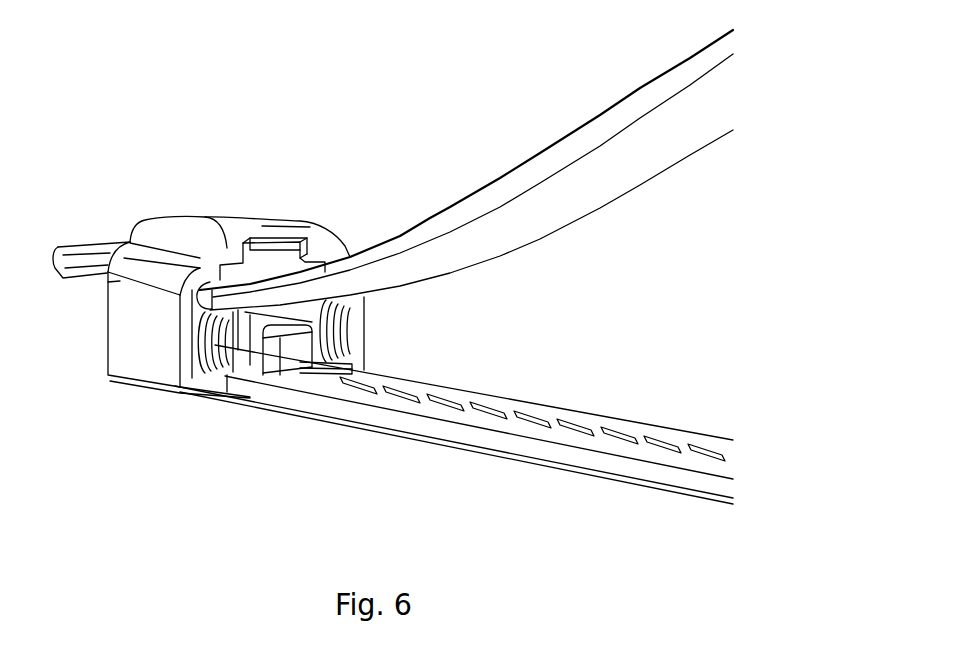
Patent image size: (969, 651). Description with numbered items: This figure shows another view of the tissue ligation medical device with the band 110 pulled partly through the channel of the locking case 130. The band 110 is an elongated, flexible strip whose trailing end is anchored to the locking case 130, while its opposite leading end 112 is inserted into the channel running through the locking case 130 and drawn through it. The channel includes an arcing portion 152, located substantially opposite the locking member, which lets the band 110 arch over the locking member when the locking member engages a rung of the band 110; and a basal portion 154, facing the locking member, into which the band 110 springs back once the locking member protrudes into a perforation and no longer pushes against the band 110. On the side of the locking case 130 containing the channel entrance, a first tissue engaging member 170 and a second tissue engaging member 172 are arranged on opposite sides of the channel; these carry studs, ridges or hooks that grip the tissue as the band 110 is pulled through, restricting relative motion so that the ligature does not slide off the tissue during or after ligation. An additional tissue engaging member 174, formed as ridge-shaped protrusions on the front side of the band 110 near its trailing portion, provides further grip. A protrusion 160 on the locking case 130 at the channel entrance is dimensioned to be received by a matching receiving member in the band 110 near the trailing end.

The band 110 is at (488, 190).
The leading end 112 is at (83, 247).
The locking case 130 is at (147, 343).
The arcing portion 152 is at (255, 265).
The basal portion 154 is at (208, 297).
The protrusion 160 is at (292, 353).
The first tissue engaging member 170 is at (213, 353).
The second tissue engaging member 172 is at (350, 312).
The tissue engaging member 174 is at (337, 373).